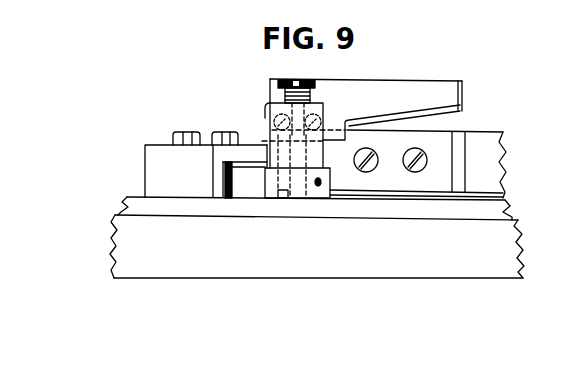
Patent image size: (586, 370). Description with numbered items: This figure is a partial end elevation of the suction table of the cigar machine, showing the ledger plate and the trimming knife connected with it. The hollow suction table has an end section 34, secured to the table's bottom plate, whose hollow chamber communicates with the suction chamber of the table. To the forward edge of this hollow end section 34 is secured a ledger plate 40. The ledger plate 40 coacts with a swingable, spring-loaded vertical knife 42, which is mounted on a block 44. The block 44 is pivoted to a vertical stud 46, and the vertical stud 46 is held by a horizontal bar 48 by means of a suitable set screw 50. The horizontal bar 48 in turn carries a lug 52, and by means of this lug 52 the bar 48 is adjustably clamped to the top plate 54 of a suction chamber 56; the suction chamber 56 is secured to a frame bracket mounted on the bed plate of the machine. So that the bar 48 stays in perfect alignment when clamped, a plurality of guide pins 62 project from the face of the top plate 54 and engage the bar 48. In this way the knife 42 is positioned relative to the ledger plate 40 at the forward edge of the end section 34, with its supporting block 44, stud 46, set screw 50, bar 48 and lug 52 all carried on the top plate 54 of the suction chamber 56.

The end section 34 is at (461, 133).
The ledger plate 40 is at (438, 138).
The vertical knife 42 is at (458, 93).
The block 44 is at (318, 107).
The vertical stud 46 is at (270, 85).
The horizontal bar 48 is at (257, 192).
The set screw 50 is at (320, 186).
The lug 52 is at (157, 143).
The top plate 54 is at (510, 205).
The suction chamber 56 is at (512, 242).
The guide pins 62 is at (284, 198).